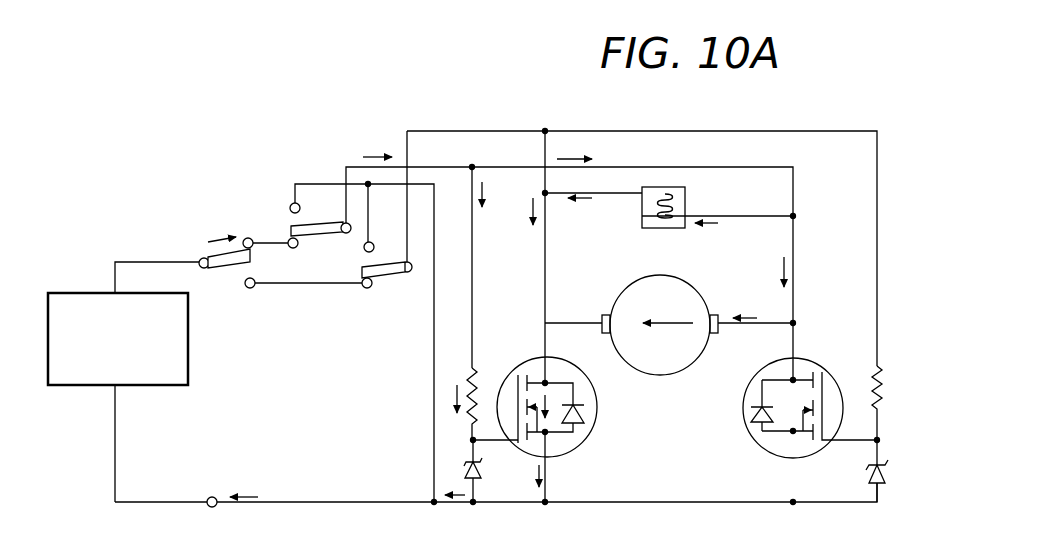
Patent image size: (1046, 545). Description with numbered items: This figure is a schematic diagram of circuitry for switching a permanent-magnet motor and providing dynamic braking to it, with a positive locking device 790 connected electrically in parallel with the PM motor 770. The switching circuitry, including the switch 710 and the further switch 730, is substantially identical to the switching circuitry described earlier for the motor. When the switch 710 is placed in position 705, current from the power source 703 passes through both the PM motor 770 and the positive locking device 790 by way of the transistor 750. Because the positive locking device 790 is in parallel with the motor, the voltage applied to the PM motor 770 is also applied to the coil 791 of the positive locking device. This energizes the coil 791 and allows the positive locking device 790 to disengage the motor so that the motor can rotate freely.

The power source 703 is at (188, 345).
The switch position 705 is at (255, 238).
The switch 710 is at (209, 269).
The switch 730 is at (343, 222).
The transistor 750 is at (588, 440).
The PM motor 770 is at (688, 373).
The positive locking device 790 is at (668, 189).
The coil 791 is at (665, 195).